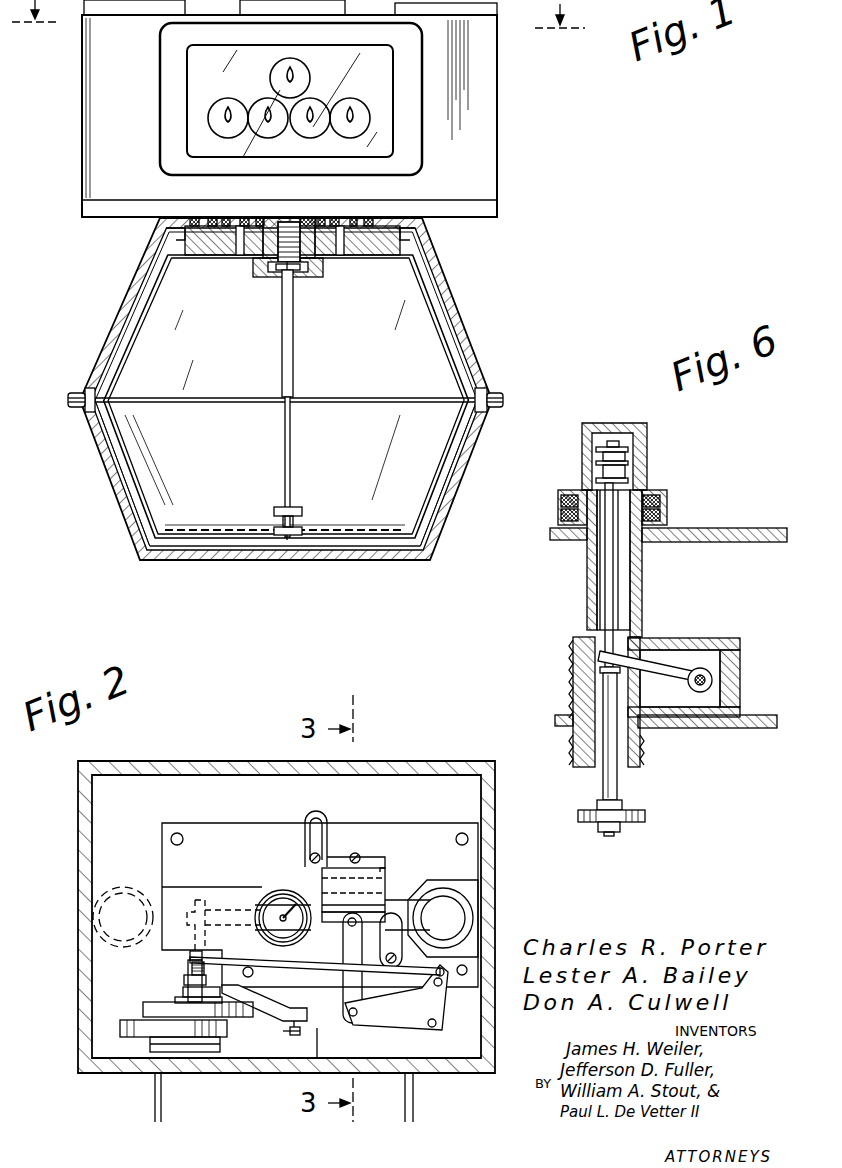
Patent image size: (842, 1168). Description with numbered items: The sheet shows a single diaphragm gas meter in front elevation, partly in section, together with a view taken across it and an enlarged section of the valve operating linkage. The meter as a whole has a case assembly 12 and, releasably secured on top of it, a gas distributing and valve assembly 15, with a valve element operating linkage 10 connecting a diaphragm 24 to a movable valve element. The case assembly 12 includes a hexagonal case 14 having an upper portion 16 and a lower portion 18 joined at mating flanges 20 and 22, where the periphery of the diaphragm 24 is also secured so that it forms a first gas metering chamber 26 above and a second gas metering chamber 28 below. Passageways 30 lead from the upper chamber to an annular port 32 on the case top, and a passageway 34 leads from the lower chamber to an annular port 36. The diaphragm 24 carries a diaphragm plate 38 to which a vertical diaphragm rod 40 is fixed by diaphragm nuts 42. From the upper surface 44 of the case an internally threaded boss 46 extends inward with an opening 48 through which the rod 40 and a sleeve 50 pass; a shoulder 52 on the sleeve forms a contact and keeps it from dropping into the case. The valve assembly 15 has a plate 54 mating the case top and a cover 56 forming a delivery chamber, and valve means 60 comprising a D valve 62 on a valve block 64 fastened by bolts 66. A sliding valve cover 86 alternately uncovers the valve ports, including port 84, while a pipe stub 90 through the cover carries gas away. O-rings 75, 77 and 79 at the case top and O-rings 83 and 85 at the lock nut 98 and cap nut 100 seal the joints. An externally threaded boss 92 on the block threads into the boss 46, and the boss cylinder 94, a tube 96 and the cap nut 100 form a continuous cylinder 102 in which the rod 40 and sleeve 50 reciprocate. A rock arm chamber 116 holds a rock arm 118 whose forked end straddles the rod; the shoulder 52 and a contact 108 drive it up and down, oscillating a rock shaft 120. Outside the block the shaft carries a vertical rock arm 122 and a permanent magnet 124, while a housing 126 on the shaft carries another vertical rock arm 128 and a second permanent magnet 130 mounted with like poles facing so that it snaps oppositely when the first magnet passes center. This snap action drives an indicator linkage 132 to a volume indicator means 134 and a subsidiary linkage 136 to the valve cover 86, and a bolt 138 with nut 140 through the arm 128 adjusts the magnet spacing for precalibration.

In FIG. 1, the valve element operating linkage 10 is at (280, 346).
In FIG. 1, the case assembly 12 is at (455, 300).
In FIG. 1, the case 14 is at (462, 324).
In FIG. 1, the gas distributing and valve assembly 15 is at (497, 146).
In FIG. 1, the upper portion 16 is at (470, 357).
In FIG. 1, the lower portion 18 is at (468, 452).
In FIG. 1, the mating flange 20 is at (500, 395).
In FIG. 1, the mating flange 22 is at (492, 412).
In FIG. 1, the diaphragm 24 is at (445, 447).
In FIG. 1, the first gas metering chamber 26 is at (343, 376).
In FIG. 1, the second gas metering chamber 28 is at (322, 546).
In FIG. 1, the passageways 30 is at (240, 255).
In FIG. 1, the annular port 32 is at (244, 216).
In FIG. 1, the passageway 34 is at (112, 456).
In FIG. 1, the annular port 36 is at (212, 216).
In FIG. 1, the diaphragm plate 38 is at (322, 522).
In FIG. 1, the diaphragm rod 40 is at (284, 451).
In FIG. 6, the diaphragm rod 40 is at (604, 553).
In FIG. 1, the diaphragm nuts 42 is at (293, 507).
In FIG. 1, the upper surface 44 is at (410, 229).
In FIG. 1, the internally threaded boss 46 is at (322, 276).
In FIG. 1, the opening 48 is at (276, 278).
In FIG. 1, the sleeve 50 is at (295, 330).
In FIG. 6, the sleeve 50 is at (618, 778).
In FIG. 1, the shoulder 52 is at (302, 272).
In FIG. 6, the shoulder 52 is at (600, 669).
In FIG. 1, the plate 54 is at (497, 212).
In FIG. 6, the plate 54 is at (758, 715).
In FIG. 1, the cover 56 is at (415, 214).
In FIG. 6, the cover 56 is at (760, 528).
In FIG. 2, the valve means 60 is at (398, 882).
In FIG. 2, the D valve 62 is at (300, 893).
In FIG. 6, the valve block 64 is at (740, 645).
In FIG. 2, the valve block 64 is at (233, 823).
In FIG. 2, the bolts 66 is at (177, 833).
In FIG. 1, the O-ring 75 is at (194, 216).
In FIG. 1, the O-ring 77 is at (226, 216).
In FIG. 1, the O-ring 79 is at (260, 216).
In FIG. 6, the O-ring 83 is at (562, 513).
In FIG. 2, the port 84 is at (380, 922).
In FIG. 6, the O-ring 85 is at (562, 497).
In FIG. 2, the valve cover 86 is at (386, 857).
In FIG. 2, the pipe stub 90 is at (485, 920).
In FIG. 6, the externally threaded boss 92 is at (641, 745).
In FIG. 6, the cylinder 94 is at (603, 688).
In FIG. 6, the tube 96 is at (642, 558).
In FIG. 6, the lock nut 98 is at (667, 512).
In FIG. 6, the cap nut 100 is at (647, 483).
In FIG. 6, the continuous cylinder 102 is at (624, 572).
In FIG. 6, the contact 108 is at (624, 470).
In FIG. 6, the rock arm chamber 116 is at (672, 650).
In FIG. 6, the rock arm 118 is at (705, 672).
In FIG. 6, the rock shaft 120 is at (712, 680).
In FIG. 2, the rock shaft 120 is at (205, 900).
In FIG. 2, the vertical rock arm 122 is at (150, 1046).
In FIG. 2, the permanent magnet 124 is at (120, 1028).
In FIG. 2, the housing 126 is at (189, 955).
In FIG. 2, the vertical rock arm 128 is at (183, 994).
In FIG. 2, the permanent magnet 130 is at (143, 1010).
In FIG. 2, the indicator linkage 132 is at (308, 1018).
In FIG. 2, the volume indicator means 134 is at (315, 1050).
In FIG. 2, the subsidiary linkage 136 is at (386, 970).
In FIG. 2, the bolt 138 is at (192, 968).
In FIG. 2, the nut 140 is at (184, 979).